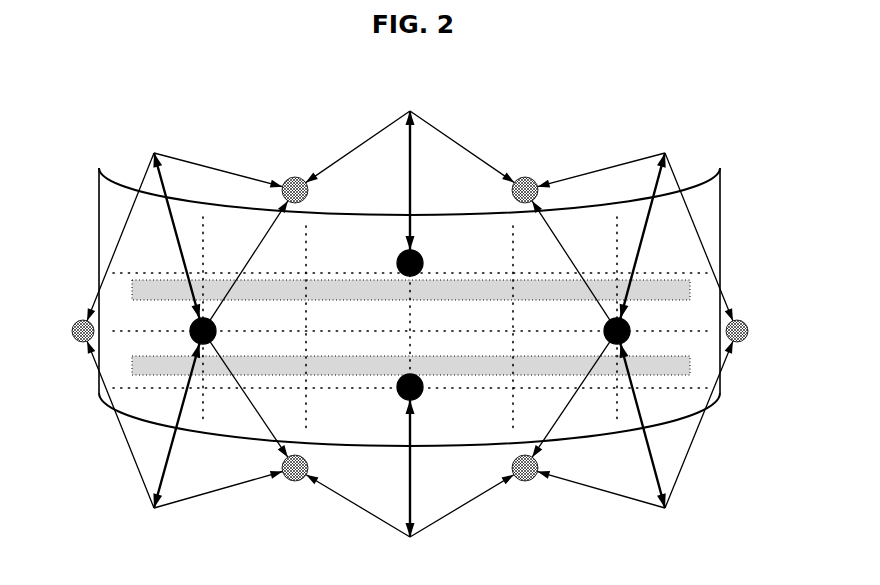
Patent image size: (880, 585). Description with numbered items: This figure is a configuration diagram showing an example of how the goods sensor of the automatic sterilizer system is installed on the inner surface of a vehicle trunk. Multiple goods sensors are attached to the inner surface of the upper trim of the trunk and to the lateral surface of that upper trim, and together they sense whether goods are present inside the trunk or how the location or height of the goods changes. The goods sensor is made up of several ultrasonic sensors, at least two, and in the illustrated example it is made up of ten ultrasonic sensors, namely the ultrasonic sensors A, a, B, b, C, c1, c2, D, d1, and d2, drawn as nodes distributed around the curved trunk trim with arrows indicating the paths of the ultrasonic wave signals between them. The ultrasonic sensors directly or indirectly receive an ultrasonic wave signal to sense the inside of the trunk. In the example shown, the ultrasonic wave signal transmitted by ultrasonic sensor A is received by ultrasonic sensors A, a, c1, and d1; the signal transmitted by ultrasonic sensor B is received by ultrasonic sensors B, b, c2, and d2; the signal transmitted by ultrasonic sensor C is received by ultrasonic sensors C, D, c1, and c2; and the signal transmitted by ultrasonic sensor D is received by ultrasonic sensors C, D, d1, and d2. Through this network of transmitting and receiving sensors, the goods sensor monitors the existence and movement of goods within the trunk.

The ultrasonic sensor A is at (218, 325).
The ultrasonic sensor B is at (606, 325).
The ultrasonic sensor C is at (417, 252).
The ultrasonic sensor D is at (402, 397).
The ultrasonic sensor a is at (72, 331).
The ultrasonic sensor b is at (748, 331).
The ultrasonic sensor c1 is at (294, 178).
The ultrasonic sensor c2 is at (525, 178).
The ultrasonic sensor d1 is at (294, 484).
The ultrasonic sensor d2 is at (525, 484).